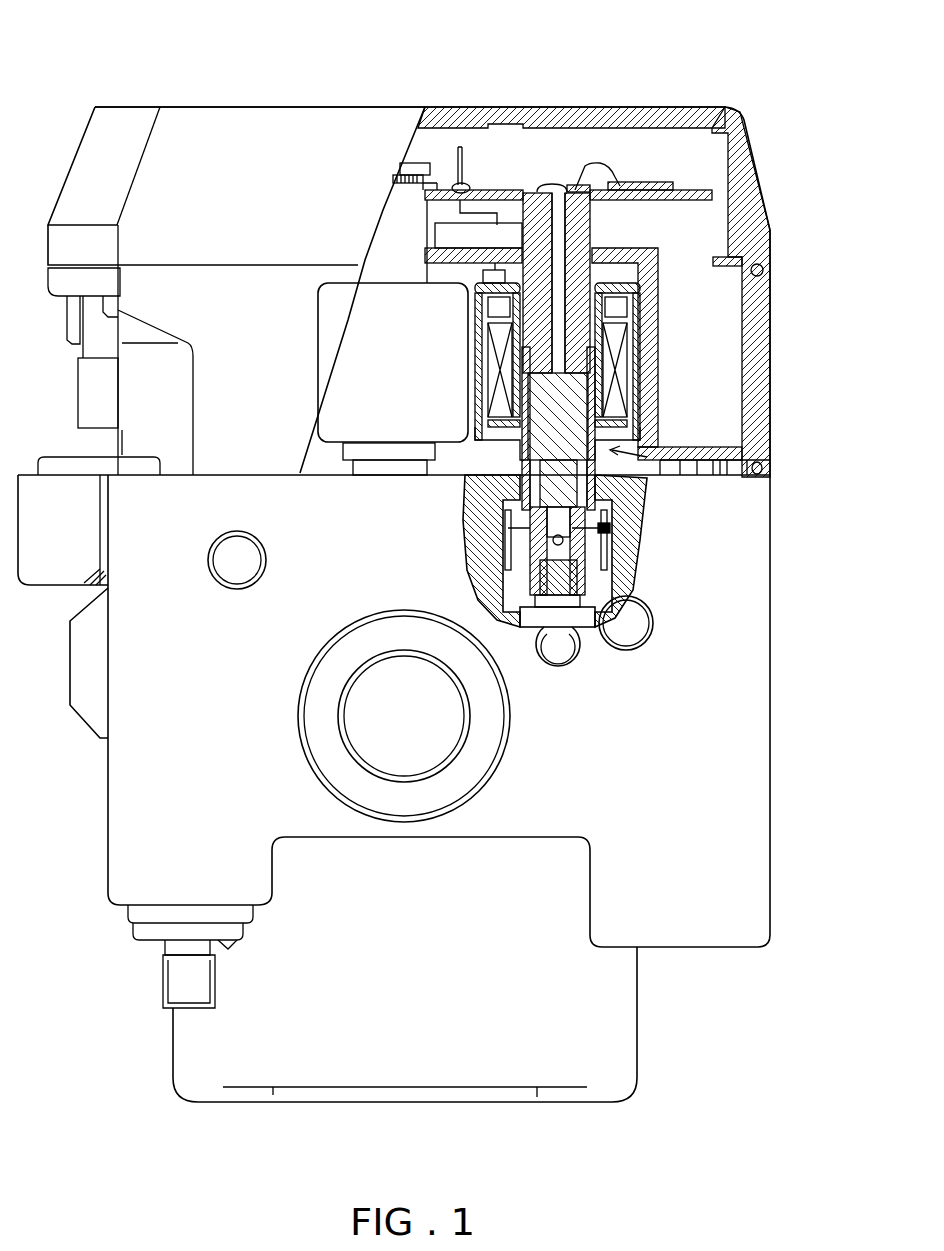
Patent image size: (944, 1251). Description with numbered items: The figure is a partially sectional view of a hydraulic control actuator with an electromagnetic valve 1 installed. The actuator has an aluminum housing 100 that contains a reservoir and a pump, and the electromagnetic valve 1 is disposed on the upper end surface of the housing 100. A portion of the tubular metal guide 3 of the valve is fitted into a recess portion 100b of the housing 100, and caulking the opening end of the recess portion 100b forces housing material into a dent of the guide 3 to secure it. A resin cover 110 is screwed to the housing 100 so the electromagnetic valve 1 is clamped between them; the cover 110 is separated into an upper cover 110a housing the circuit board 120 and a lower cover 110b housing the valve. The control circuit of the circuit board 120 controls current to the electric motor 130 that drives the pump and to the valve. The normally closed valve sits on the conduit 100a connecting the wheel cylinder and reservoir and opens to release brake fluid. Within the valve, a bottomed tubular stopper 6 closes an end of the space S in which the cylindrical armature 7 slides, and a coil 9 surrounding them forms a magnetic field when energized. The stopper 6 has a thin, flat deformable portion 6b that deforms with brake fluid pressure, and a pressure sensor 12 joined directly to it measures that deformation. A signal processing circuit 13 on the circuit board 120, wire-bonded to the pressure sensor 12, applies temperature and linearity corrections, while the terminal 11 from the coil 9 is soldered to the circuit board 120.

The electromagnetic valve 1 is at (725, 452).
The guide 3 is at (632, 538).
The stopper 6 is at (587, 217).
The deformable portion 6b is at (533, 190).
The armature 7 is at (572, 403).
The coil 9 is at (618, 338).
The terminal 11 is at (472, 175).
The pressure sensor 12 is at (557, 185).
The signal processing circuit 13 is at (658, 182).
The space S is at (575, 495).
The housing 100 is at (735, 843).
The conduit 100a is at (616, 545).
The recess portion 100b is at (595, 592).
The cover 110 is at (275, 51).
The upper cover 110a is at (235, 150).
The lower cover 110b is at (165, 285).
The circuit board 120 is at (448, 182).
The electric motor 130 is at (615, 1020).